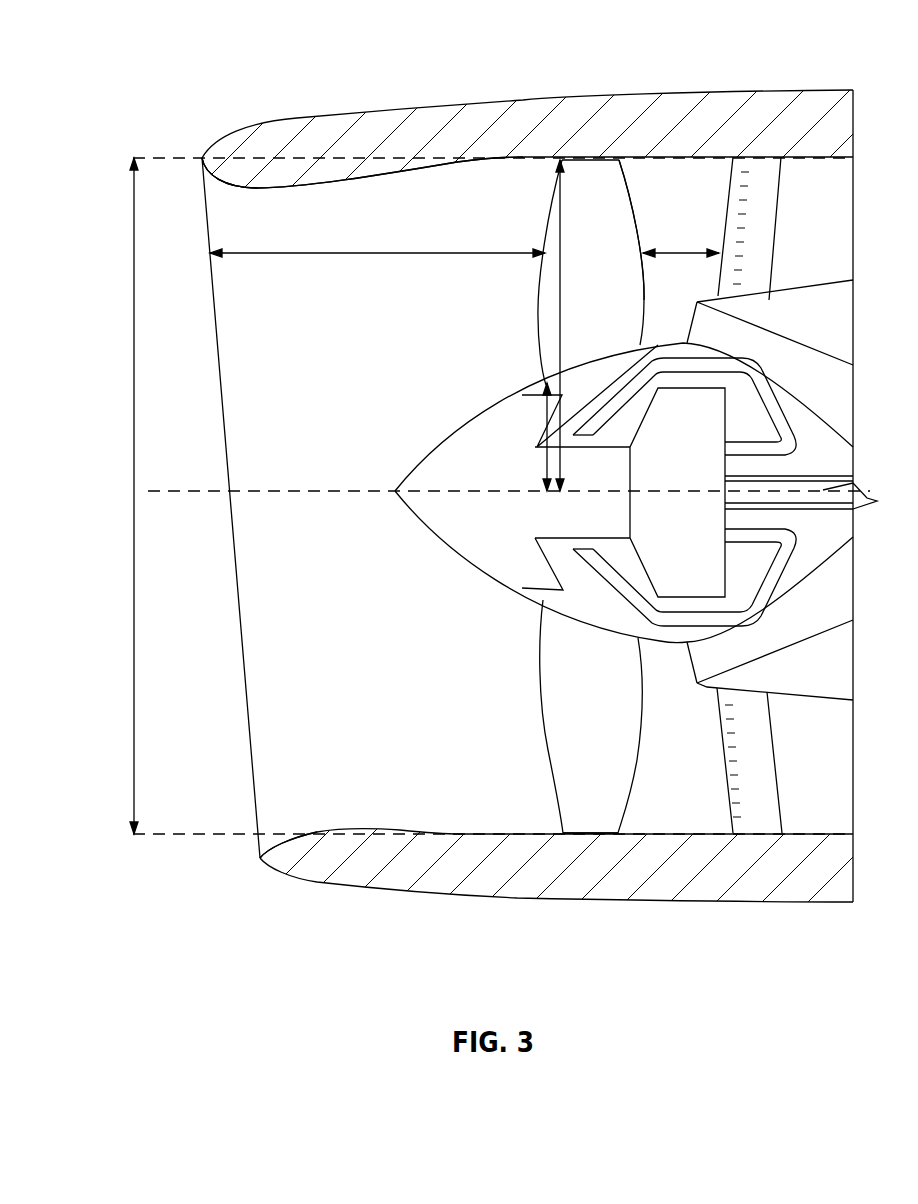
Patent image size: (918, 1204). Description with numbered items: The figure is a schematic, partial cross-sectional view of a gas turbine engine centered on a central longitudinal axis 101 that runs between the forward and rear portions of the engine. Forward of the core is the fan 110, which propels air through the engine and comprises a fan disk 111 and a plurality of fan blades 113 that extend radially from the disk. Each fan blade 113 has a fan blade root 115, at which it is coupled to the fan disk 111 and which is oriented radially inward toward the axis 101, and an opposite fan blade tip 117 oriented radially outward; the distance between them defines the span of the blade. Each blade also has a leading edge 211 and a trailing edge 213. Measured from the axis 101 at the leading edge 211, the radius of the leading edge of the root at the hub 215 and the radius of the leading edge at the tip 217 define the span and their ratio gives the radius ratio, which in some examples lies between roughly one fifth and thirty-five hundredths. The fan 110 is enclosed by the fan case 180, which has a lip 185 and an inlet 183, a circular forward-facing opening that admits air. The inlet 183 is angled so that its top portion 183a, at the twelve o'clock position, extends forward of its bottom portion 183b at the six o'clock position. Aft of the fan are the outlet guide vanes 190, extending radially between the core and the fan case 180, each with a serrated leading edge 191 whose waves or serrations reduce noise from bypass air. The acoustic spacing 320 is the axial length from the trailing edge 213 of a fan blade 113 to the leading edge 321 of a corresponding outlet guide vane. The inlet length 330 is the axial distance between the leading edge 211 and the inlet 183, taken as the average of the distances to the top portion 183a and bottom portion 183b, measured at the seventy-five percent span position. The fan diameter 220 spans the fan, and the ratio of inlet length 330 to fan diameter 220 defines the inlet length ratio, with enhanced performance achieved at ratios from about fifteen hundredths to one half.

The central longitudinal axis 101 is at (197, 491).
The fan 110 is at (625, 436).
The fan disk 111 is at (445, 547).
The fan blade 113 is at (558, 688).
The fan blade root 115 is at (540, 605).
The fan blade tip 117 is at (563, 832).
The fan case 180 is at (343, 113).
The inlet 183 is at (240, 742).
The top portion of the inlet 183a is at (200, 155).
The bottom portion of the inlet 183b is at (257, 858).
The lip 185 is at (278, 188).
The outlet guide vanes 190 is at (735, 504).
The serrated leading edge 191 is at (730, 787).
The leading edge 211 is at (560, 172).
The trailing edge 213 is at (640, 175).
The radius of the leading edge of the root at the hub 215 is at (545, 456).
The radius of the leading edge at the tip 217 is at (558, 195).
The fan diameter 220 is at (133, 497).
The acoustic spacing 320 is at (672, 253).
The leading edge of the OGV 321 is at (725, 193).
The inlet length 330 is at (410, 253).